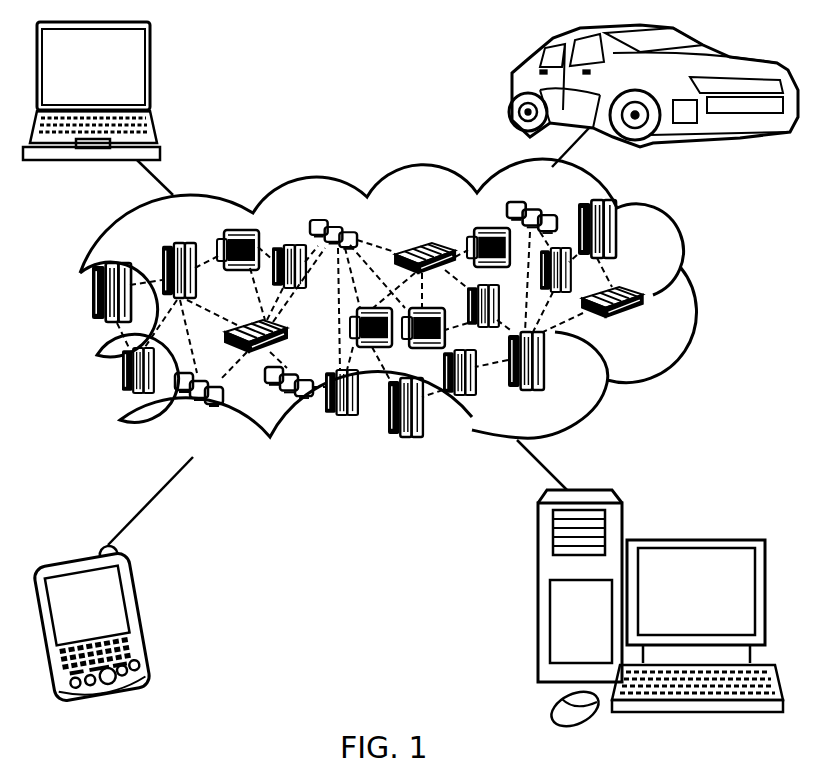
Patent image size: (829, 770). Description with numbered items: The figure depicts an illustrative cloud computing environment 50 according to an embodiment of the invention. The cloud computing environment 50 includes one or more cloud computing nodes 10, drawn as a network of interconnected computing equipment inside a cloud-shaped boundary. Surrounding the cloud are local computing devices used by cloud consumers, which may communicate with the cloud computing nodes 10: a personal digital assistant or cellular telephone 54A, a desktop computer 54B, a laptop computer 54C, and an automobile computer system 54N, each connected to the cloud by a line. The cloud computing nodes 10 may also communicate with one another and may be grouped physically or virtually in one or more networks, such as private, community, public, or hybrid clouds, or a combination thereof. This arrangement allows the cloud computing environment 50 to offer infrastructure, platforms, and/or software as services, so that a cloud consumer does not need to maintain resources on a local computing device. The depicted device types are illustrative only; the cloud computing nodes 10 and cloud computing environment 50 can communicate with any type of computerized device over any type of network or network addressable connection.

The cloud computing nodes 10 is at (412, 318).
The cloud computing environment 50 is at (698, 297).
The personal digital assistant or cellular telephone 54A is at (142, 617).
The desktop computer 54B is at (695, 541).
The laptop computer 54C is at (152, 74).
The automobile computer system 54N is at (511, 87).